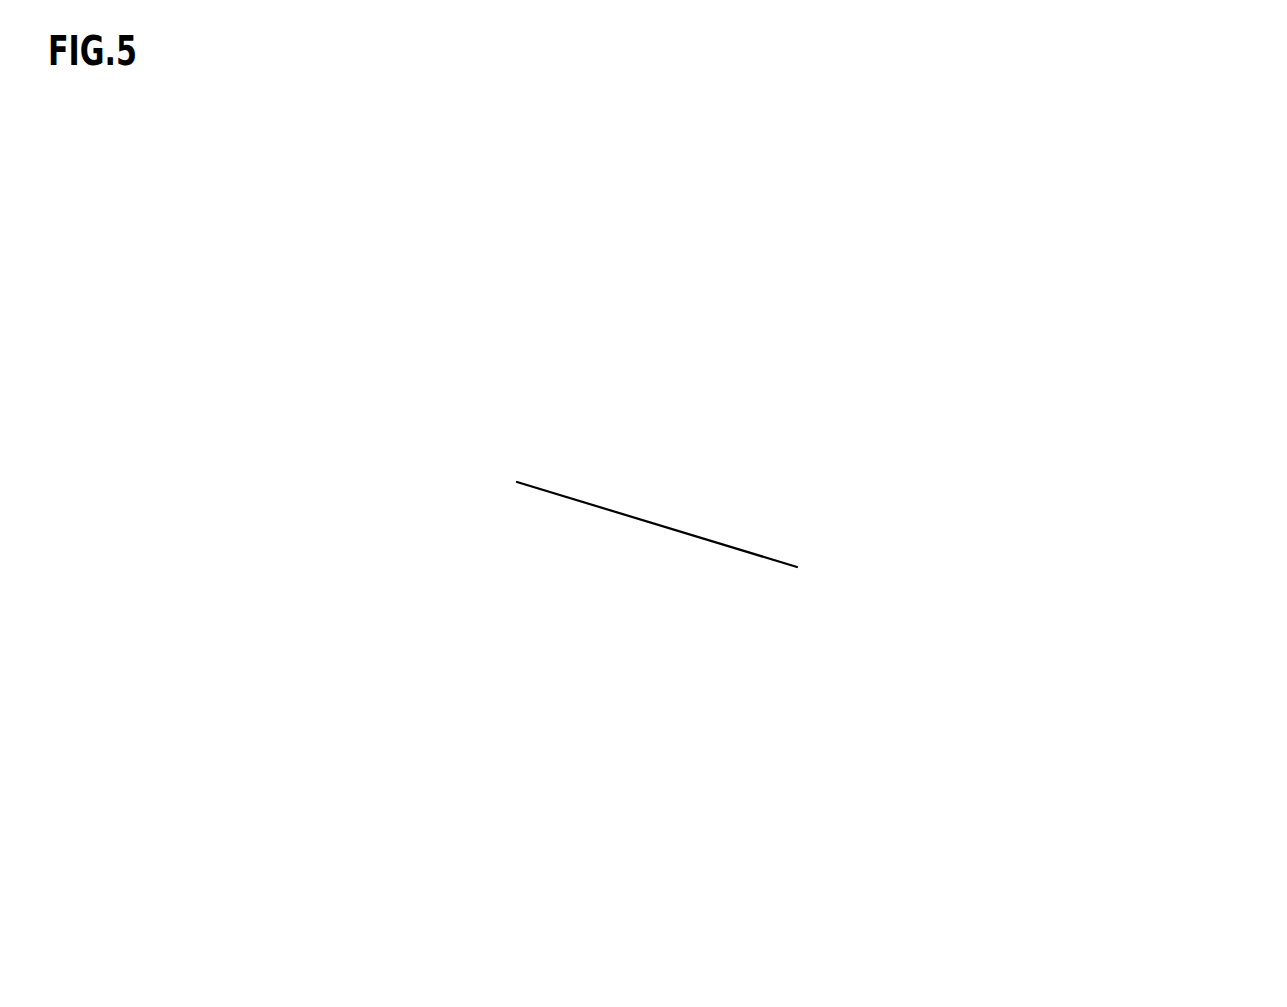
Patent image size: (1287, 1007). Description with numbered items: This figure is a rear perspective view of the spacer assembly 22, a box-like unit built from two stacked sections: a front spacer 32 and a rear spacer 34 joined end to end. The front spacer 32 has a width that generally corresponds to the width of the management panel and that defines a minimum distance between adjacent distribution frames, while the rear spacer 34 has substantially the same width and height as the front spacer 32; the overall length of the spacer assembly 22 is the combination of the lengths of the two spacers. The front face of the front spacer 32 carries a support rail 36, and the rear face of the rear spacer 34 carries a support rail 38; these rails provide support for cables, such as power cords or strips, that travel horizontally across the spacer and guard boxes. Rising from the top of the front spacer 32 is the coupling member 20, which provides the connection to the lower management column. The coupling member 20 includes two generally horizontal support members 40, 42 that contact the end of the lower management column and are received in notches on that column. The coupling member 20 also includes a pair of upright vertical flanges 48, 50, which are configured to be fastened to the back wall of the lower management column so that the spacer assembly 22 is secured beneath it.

The coupling member 20 is at (587, 252).
The spacer assembly 22 is at (1018, 695).
The front spacer 32 is at (1057, 542).
The rear spacer 34 is at (764, 668).
The support rail 36 is at (1207, 447).
The support rail 38 is at (468, 787).
The horizontal support member 40 is at (1110, 195).
The horizontal support member 42 is at (848, 132).
The vertical flange 48 is at (948, 138).
The vertical flange 50 is at (760, 161).